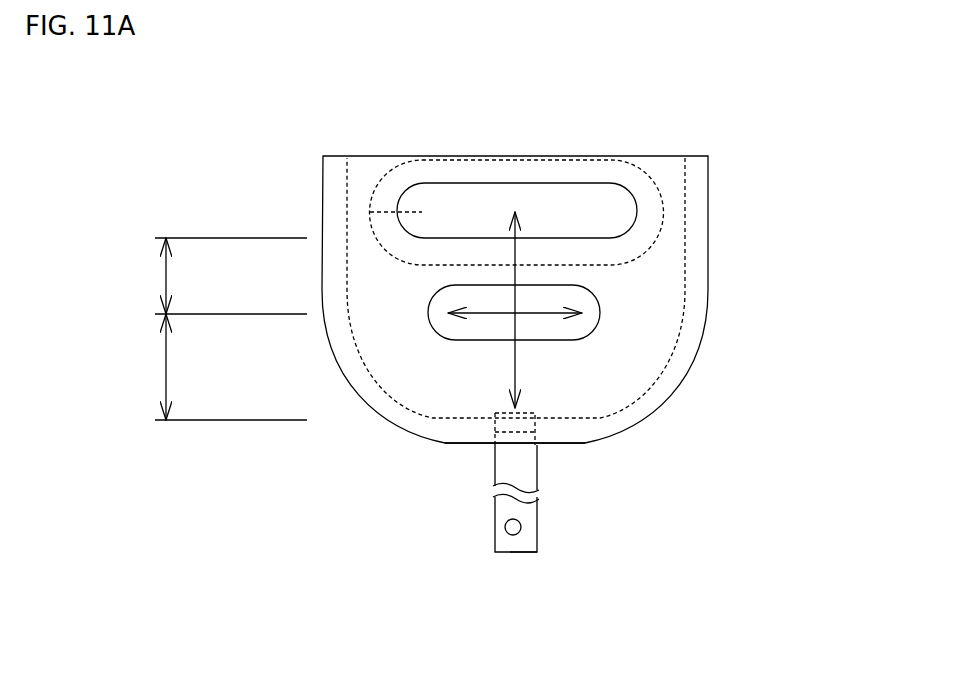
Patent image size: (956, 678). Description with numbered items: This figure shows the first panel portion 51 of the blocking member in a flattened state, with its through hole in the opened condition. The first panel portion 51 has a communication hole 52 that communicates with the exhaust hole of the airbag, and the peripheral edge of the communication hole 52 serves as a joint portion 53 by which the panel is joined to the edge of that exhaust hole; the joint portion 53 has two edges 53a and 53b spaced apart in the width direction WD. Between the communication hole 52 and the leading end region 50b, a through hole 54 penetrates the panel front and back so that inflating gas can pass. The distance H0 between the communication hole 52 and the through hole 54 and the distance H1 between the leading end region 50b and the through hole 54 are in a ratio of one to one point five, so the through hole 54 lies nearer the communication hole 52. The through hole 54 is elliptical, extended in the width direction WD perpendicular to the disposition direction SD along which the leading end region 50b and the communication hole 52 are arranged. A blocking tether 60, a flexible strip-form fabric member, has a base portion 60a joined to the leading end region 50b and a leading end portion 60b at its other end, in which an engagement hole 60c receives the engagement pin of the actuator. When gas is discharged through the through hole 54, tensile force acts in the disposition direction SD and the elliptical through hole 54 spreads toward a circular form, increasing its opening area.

The first panel portion 51 is at (685, 282).
The joint portion 53 is at (646, 170).
The edge of the joint portion 53a is at (368, 212).
The edge of the joint portion 53b is at (663, 217).
The communication hole 52 is at (467, 207).
The through hole 54 is at (600, 313).
The disposition direction SD is at (515, 365).
The width direction WD is at (483, 317).
The distance between the communication hole and the through hole H0 is at (213, 276).
The distance between the leading end region and the through hole H1 is at (213, 367).
The leading end region 50b is at (482, 442).
The base portion 60a is at (540, 442).
The blocking tether 60 is at (550, 520).
The leading end portion 60b is at (512, 543).
The engagement hole 60c is at (518, 532).